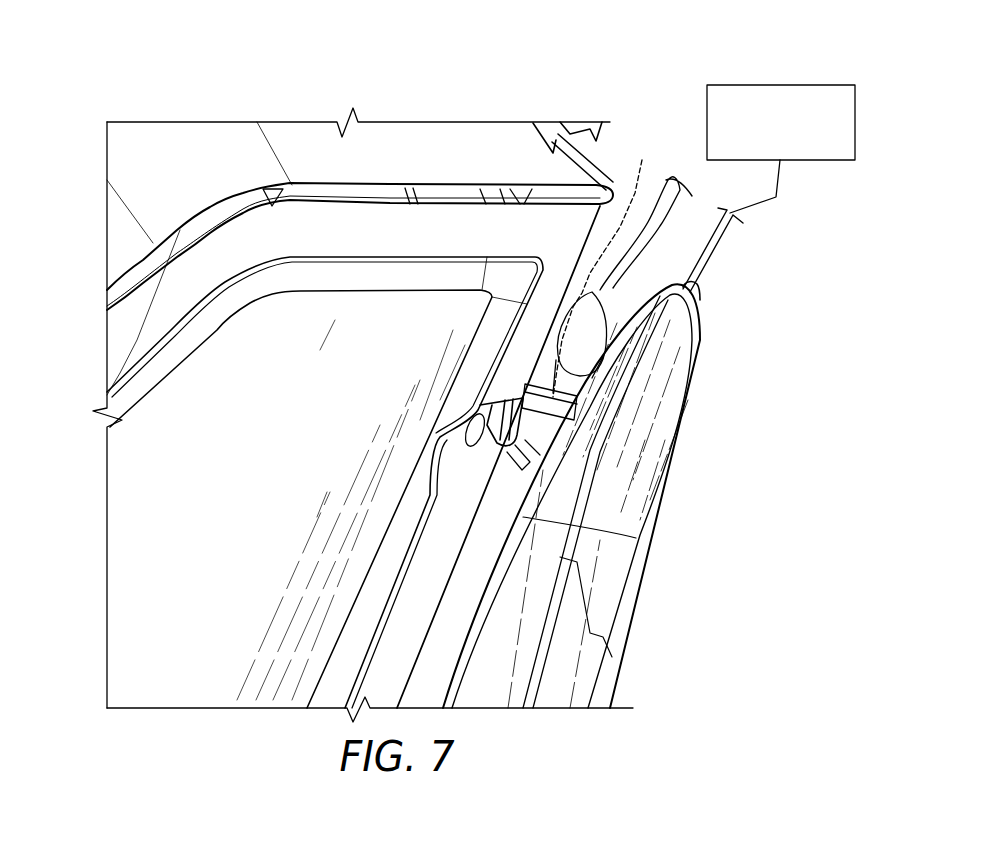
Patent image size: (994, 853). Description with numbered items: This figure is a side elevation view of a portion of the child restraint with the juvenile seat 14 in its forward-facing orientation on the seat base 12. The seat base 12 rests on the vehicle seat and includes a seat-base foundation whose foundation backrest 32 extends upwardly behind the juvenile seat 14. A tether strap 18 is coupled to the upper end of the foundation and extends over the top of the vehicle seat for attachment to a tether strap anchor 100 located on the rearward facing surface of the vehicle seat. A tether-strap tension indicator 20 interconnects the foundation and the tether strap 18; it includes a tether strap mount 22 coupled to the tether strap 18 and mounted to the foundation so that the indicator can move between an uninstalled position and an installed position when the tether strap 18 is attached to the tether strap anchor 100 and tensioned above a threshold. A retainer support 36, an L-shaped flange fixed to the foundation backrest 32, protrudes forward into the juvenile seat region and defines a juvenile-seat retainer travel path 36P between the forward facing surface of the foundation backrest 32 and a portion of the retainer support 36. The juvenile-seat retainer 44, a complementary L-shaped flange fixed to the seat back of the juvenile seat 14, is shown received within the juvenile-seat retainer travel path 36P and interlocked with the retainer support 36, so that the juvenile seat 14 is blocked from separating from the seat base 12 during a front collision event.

The tether strap anchor 100 is at (778, 85).
The juvenile seat 14 is at (126, 243).
The tether strap mount 22 is at (603, 267).
The tether strap 18 is at (680, 223).
The tether-strap tension indicator 20 is at (697, 288).
The seat base 12 is at (680, 496).
The foundation backrest 32 is at (664, 571).
The retainer support 36 is at (510, 410).
The juvenile-seat retainer 44 is at (491, 458).
The juvenile-seat retainer travel path 36P is at (510, 469).